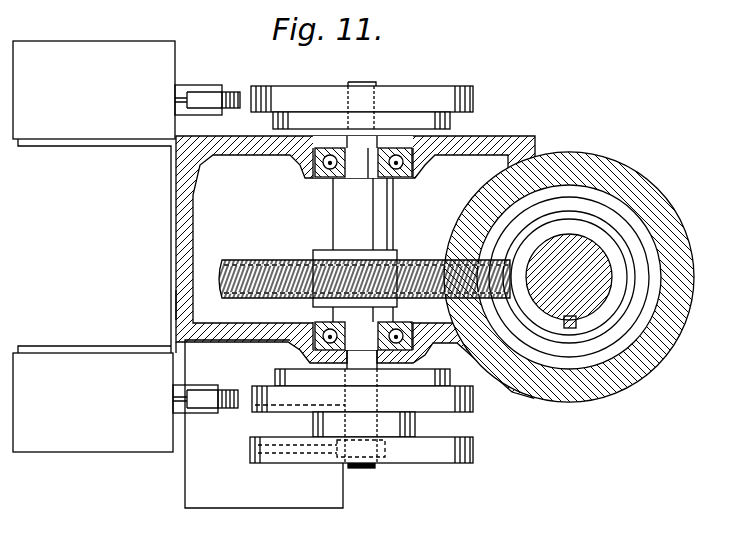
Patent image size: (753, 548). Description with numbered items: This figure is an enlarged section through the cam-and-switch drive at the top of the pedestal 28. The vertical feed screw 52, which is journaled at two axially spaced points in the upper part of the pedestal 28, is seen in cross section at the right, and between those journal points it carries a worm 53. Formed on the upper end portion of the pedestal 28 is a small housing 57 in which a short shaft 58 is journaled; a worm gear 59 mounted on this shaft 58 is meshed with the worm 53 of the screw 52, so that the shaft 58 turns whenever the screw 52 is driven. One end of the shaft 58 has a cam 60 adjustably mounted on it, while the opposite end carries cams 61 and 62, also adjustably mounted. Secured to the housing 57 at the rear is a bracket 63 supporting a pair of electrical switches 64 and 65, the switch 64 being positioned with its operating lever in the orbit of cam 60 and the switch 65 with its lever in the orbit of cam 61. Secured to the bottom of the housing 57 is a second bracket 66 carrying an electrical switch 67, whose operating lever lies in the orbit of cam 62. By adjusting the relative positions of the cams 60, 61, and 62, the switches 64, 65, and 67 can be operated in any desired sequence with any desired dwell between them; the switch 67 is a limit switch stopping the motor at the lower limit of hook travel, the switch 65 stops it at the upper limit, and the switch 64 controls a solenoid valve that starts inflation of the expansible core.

The pedestal 28 is at (672, 333).
The feed screw 52 is at (607, 270).
The worm 53 is at (598, 215).
The housing 57 is at (178, 233).
The shaft 58 is at (396, 203).
The worm gear 59 is at (437, 261).
The cam 60 is at (458, 88).
The cam 61 is at (473, 412).
The cam 62 is at (420, 464).
The bracket 63 is at (176, 300).
The electrical switch 64 is at (177, 55).
The electrical switch 65 is at (105, 453).
The second bracket 66 is at (185, 357).
The electrical switch 67 is at (258, 508).